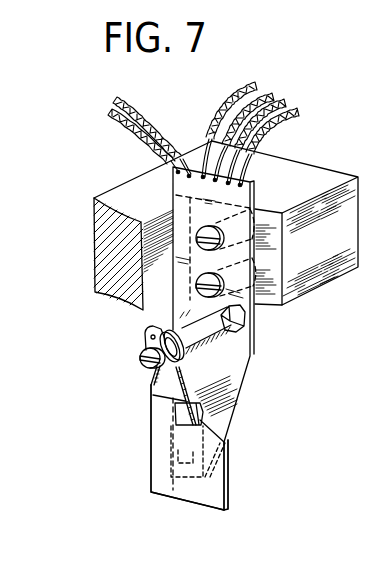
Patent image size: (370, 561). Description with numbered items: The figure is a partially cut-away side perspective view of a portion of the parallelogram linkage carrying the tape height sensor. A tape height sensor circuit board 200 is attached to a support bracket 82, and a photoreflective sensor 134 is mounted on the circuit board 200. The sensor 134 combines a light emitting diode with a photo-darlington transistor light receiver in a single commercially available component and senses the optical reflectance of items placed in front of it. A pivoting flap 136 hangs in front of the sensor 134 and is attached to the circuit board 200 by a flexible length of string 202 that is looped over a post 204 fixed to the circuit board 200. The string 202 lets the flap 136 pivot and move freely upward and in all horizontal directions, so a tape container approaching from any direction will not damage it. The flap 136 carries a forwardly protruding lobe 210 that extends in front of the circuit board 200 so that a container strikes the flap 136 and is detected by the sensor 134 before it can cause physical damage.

The support bracket 82 is at (303, 163).
The tape height sensor circuit board 200 is at (255, 335).
The post 204 is at (146, 337).
The string 202 is at (150, 380).
The photoreflective sensor 134 is at (230, 424).
The pivoting flap 136 is at (151, 492).
The forwardly protruding lobe 210 is at (229, 509).